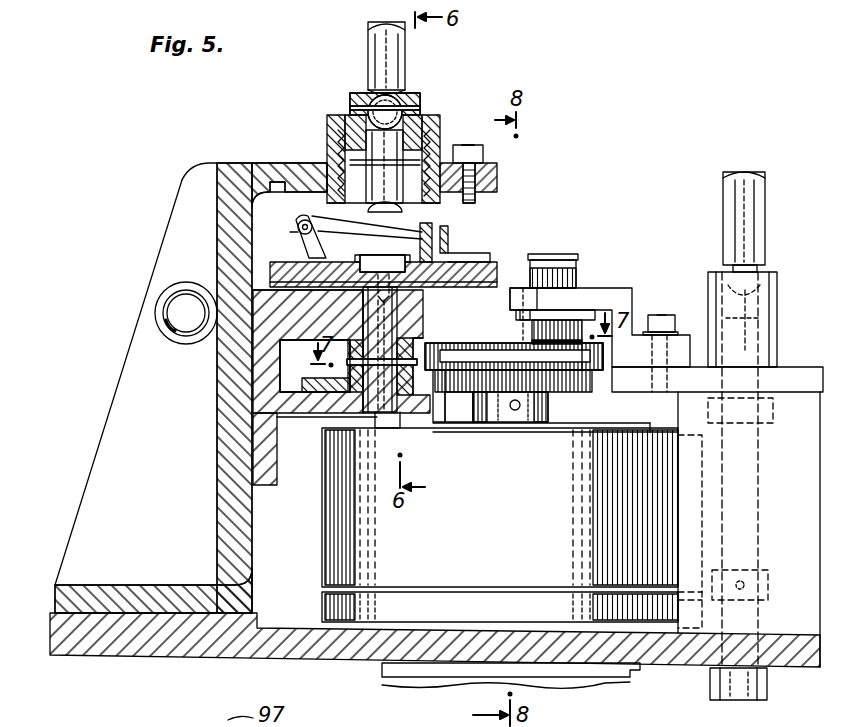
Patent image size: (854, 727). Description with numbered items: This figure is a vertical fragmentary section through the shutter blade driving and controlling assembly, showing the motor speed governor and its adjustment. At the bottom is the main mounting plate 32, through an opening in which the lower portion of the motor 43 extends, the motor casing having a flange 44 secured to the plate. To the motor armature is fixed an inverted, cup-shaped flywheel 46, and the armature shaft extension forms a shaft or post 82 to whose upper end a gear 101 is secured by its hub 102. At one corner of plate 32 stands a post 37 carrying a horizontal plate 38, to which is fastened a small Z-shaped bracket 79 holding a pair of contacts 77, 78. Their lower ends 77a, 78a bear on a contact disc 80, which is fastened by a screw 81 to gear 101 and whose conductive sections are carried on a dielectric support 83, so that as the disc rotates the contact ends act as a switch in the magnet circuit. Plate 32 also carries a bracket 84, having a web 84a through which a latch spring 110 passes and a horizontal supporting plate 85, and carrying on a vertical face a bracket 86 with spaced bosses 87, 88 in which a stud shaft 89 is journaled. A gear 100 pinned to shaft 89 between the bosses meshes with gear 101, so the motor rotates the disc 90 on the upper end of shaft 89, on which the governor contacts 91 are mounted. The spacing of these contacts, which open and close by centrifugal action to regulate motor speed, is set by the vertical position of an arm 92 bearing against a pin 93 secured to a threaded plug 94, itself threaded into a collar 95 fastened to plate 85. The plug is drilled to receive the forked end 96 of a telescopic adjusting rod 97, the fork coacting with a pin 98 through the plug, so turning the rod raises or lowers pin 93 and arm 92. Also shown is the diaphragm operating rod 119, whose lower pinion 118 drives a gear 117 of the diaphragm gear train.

The main mounting plate 32 is at (668, 648).
The post 37 is at (692, 420).
The horizontal plate 38 is at (795, 372).
The motor 43 is at (398, 677).
The flange 44 is at (350, 603).
The flywheel 46 is at (350, 540).
The contact 77 is at (540, 270).
The lower end of contact 77a is at (545, 340).
The contact 78 is at (566, 270).
The lower end of contact 78a is at (582, 346).
The Z-shaped bracket 79 is at (618, 298).
The contact disc 80 is at (455, 342).
The screw 81 is at (515, 346).
The shaft or post 82 is at (500, 412).
The support 83 is at (588, 370).
The bracket 84 is at (232, 510).
The web of bracket 84a is at (128, 380).
The horizontal supporting plate 85 is at (495, 180).
The bracket 86 is at (265, 420).
The boss 87 is at (313, 314).
The boss 88 is at (306, 413).
The stud shaft 89 is at (381, 425).
The disc 90 is at (490, 262).
The governor contacts 91 is at (435, 232).
The arm 92 is at (385, 215).
The pin 93 is at (372, 190).
The threaded plug 94 is at (412, 110).
The collar 95 is at (330, 138).
The forked end 96 is at (384, 96).
The adjusting rod 97 is at (370, 52).
The pin 98 is at (352, 108).
The gear 100 is at (443, 412).
The gear 101 is at (470, 412).
The hub 102 is at (530, 408).
The spring 110 is at (185, 292).
The gear 117 is at (772, 420).
The pinion 118 is at (770, 304).
The operating rod 119 is at (757, 200).